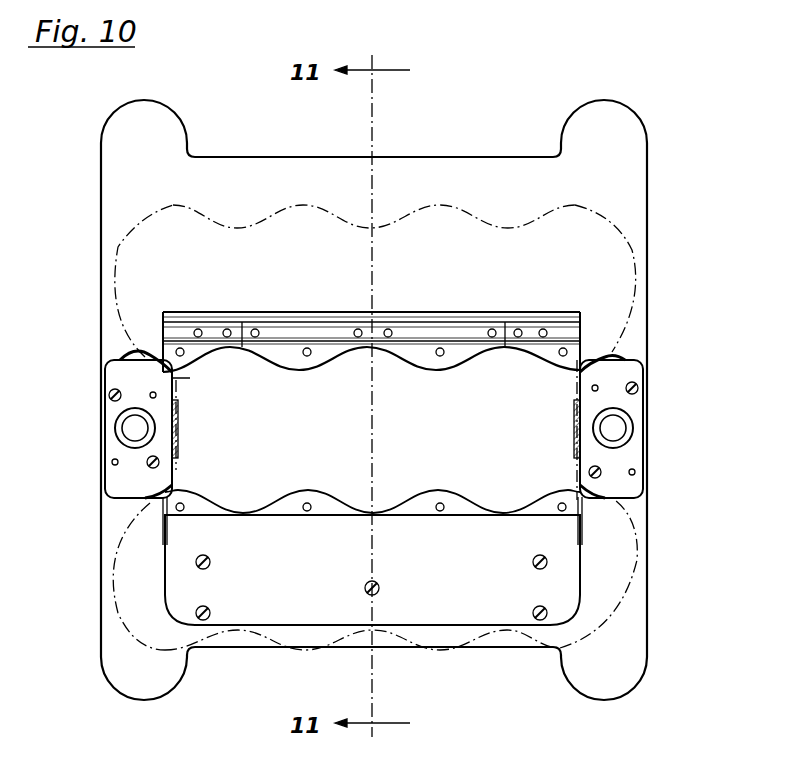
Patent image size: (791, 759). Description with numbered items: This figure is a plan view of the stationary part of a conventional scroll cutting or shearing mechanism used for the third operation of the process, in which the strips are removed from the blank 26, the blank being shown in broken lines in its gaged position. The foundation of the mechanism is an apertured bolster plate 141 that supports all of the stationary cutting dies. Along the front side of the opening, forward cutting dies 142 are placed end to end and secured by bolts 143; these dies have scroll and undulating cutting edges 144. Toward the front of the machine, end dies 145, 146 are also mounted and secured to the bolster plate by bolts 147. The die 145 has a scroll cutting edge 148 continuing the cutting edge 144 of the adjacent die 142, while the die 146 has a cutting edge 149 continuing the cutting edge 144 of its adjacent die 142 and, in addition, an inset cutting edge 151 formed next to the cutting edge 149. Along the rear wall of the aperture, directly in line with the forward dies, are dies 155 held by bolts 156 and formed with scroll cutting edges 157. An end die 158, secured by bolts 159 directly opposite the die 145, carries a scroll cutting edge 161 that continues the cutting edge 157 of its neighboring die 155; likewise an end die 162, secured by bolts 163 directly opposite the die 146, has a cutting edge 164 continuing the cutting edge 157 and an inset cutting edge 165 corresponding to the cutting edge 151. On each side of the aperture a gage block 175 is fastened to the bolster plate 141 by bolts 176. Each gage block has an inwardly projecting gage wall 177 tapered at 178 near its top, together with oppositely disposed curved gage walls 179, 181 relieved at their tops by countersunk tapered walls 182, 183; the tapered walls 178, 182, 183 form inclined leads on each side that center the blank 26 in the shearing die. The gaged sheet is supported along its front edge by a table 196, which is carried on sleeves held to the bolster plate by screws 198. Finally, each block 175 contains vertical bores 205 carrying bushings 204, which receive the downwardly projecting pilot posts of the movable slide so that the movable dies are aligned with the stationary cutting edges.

The bolster plate 141 is at (474, 172).
The blank 26 is at (505, 228).
The dies 155 is at (278, 345).
The end die 162 is at (205, 343).
The bolts 156 is at (396, 335).
The end die 158 is at (530, 345).
The bolts 159 is at (568, 355).
The scroll cutting edges 157 is at (334, 362).
The cutting edge 164 is at (222, 351).
The inset cutting edge 165 is at (192, 378).
The scroll cutting edge 161 is at (529, 357).
The gage block 175 is at (106, 420).
The bolts 176 is at (108, 393).
The countersunk tapered wall 183 is at (605, 375).
The vertical bores 205 is at (115, 428).
The bushings 204 is at (124, 438).
The gage wall 177 is at (180, 428).
The tapered portion 178 is at (178, 441).
The curved gage wall 181 is at (118, 360).
The bolts 163 is at (170, 362).
The countersunk tapered wall 182 is at (162, 493).
The curved gage wall 179 is at (158, 499).
The inset cutting edge 151 is at (203, 490).
The end die 146 is at (224, 506).
The cutting edge 149 is at (243, 512).
The scroll and undulating cutting edges 144 is at (339, 499).
The forward cutting dies 142 is at (289, 508).
The bolts 143 is at (462, 510).
The scroll cutting edge 148 is at (560, 494).
The end die 145 is at (520, 511).
The bolts 147 is at (183, 511).
The table 196 is at (372, 570).
The screws 198 is at (211, 562).